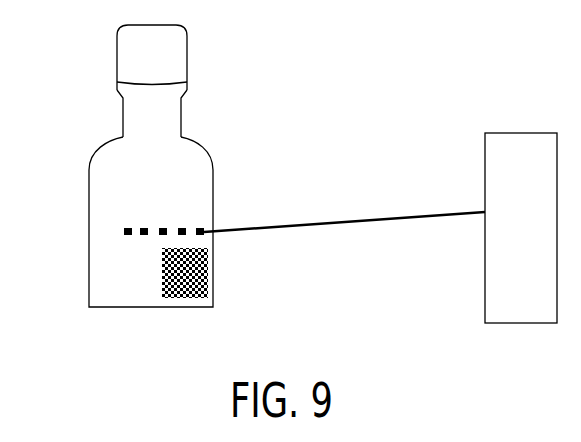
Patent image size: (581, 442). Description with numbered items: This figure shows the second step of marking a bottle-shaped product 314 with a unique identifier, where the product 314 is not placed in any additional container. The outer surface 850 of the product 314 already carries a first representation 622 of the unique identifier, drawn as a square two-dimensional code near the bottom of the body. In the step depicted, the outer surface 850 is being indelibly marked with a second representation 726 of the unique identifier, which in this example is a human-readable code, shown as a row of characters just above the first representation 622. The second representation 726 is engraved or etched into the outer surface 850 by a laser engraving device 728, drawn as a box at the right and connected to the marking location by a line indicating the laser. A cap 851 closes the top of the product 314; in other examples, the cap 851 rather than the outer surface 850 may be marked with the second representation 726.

The outer surface 850 is at (120, 164).
The cap 851 is at (117, 50).
The product 314 is at (89, 242).
The second representation of the unique identifier 726 is at (183, 226).
The first representation of the unique identifier 622 is at (188, 293).
The laser engraving device 728 is at (515, 133).